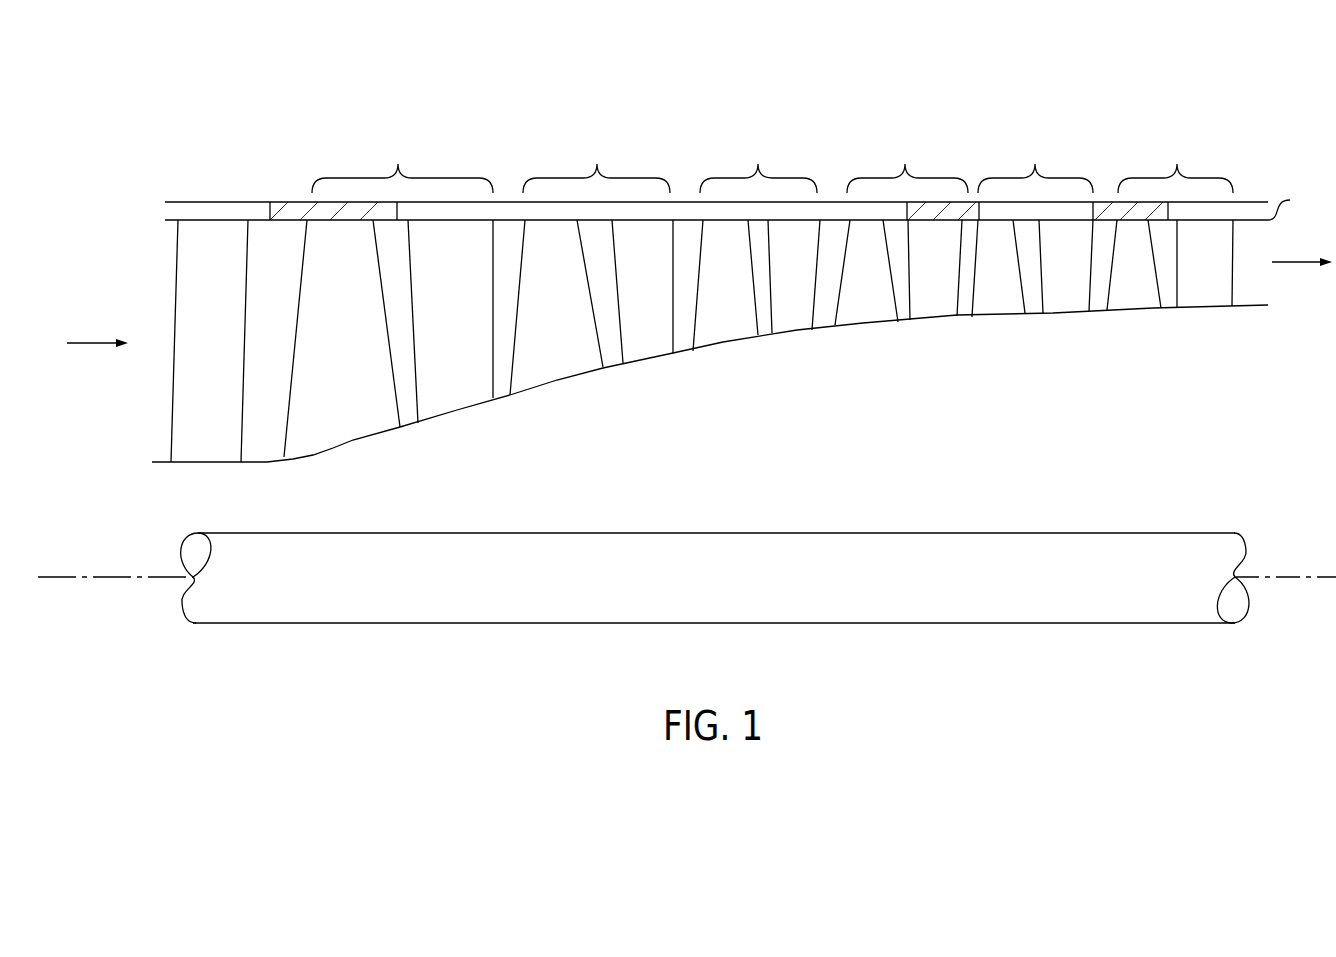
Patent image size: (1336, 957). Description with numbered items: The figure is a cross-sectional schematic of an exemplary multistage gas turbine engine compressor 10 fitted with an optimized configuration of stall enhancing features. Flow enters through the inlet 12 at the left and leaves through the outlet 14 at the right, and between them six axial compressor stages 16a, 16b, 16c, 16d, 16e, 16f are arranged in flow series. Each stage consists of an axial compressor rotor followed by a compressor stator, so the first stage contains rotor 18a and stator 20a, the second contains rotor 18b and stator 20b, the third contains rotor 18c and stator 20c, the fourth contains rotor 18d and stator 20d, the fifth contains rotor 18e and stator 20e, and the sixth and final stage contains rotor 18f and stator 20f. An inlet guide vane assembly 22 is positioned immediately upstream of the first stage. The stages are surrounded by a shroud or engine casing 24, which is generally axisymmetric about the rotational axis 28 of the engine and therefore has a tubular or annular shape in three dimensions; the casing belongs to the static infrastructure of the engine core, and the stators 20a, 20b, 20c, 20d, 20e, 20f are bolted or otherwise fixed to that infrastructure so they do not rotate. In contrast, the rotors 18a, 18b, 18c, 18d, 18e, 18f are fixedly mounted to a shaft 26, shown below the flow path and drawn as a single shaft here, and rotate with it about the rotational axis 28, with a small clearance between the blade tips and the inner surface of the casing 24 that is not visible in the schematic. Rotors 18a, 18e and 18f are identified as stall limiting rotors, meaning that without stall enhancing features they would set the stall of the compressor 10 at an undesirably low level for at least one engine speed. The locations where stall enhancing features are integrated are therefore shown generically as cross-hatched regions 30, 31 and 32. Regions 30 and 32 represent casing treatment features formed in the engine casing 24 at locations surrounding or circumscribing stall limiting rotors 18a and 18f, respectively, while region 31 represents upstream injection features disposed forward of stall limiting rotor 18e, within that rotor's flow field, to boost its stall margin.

The multistage GTE compressor 10 is at (147, 118).
The inlet 12 is at (157, 243).
The outlet 14 is at (1300, 237).
The first axial compressor stage 16a is at (402, 165).
The second axial compressor stage 16b is at (596, 165).
The third axial compressor stage 16c is at (758, 165).
The fourth axial compressor stage 16d is at (907, 165).
The fifth axial compressor stage 16e is at (1035, 165).
The sixth axial compressor stage 16f is at (1175, 165).
The compressor rotor 18a is at (350, 432).
The compressor rotor 18b is at (558, 375).
The compressor rotor 18c is at (723, 335).
The compressor rotor 18d is at (863, 315).
The compressor rotor 18e is at (995, 308).
The compressor rotor 18f is at (1130, 300).
The compressor stator 20a is at (454, 402).
The compressor stator 20b is at (648, 347).
The compressor stator 20c is at (793, 322).
The compressor stator 20d is at (935, 310).
The compressor stator 20e is at (1065, 300).
The compressor stator 20f is at (1198, 295).
The inlet guide vane assembly 22 is at (201, 463).
The engine casing 24 is at (245, 208).
The shaft 26 is at (765, 540).
The rotational axis 28 is at (110, 577).
The cross-hatched region 30 is at (330, 208).
The cross-hatched region 31 is at (945, 205).
The cross-hatched region 32 is at (1138, 207).